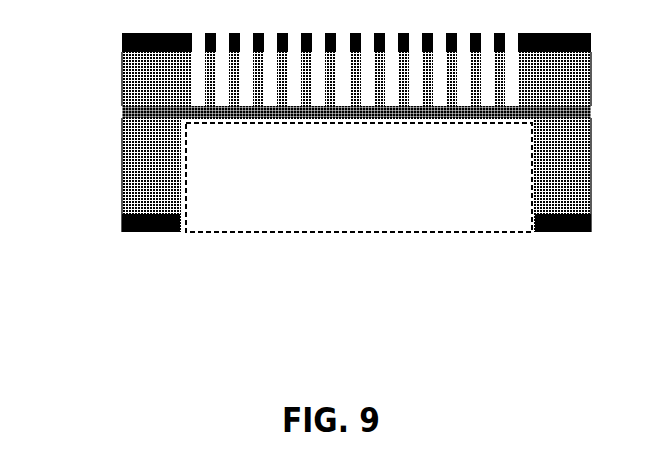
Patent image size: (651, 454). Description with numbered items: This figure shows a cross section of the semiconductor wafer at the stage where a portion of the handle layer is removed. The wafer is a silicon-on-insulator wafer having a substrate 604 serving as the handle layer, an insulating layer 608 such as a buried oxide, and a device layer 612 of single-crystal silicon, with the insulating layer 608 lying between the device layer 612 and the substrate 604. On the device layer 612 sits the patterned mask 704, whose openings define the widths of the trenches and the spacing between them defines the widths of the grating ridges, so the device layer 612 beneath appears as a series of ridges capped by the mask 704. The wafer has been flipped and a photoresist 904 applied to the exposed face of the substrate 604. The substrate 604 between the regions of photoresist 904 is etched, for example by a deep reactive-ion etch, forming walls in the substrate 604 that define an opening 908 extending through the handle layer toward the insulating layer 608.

The substrate 604 is at (122, 158).
The insulating layer 608 is at (122, 112).
The device layer 612 is at (122, 70).
The mask 704 is at (122, 43).
The photoresist 904 is at (122, 222).
The opening 908 is at (500, 233).